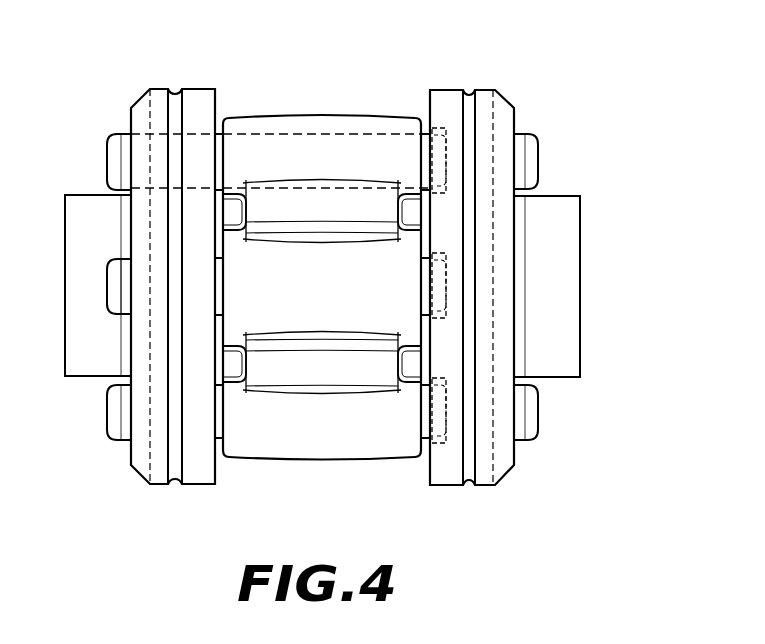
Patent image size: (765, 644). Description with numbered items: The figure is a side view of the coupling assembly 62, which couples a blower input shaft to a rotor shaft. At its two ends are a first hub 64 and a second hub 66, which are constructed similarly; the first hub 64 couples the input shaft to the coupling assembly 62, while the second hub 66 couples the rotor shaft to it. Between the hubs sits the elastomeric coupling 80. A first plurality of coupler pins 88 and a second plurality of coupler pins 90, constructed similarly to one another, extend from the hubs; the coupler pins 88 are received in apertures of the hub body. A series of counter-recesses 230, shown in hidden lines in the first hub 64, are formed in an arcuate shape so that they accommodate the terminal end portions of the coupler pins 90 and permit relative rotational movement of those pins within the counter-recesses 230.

The coupling assembly 62 is at (603, 55).
The first hub 64 is at (485, 110).
The second hub 66 is at (162, 95).
The elastomeric coupling 80 is at (360, 126).
The first plurality of coupler pins 88 is at (533, 158).
The second plurality of coupler pins 90 is at (112, 146).
The counter-recesses 230 is at (445, 128).